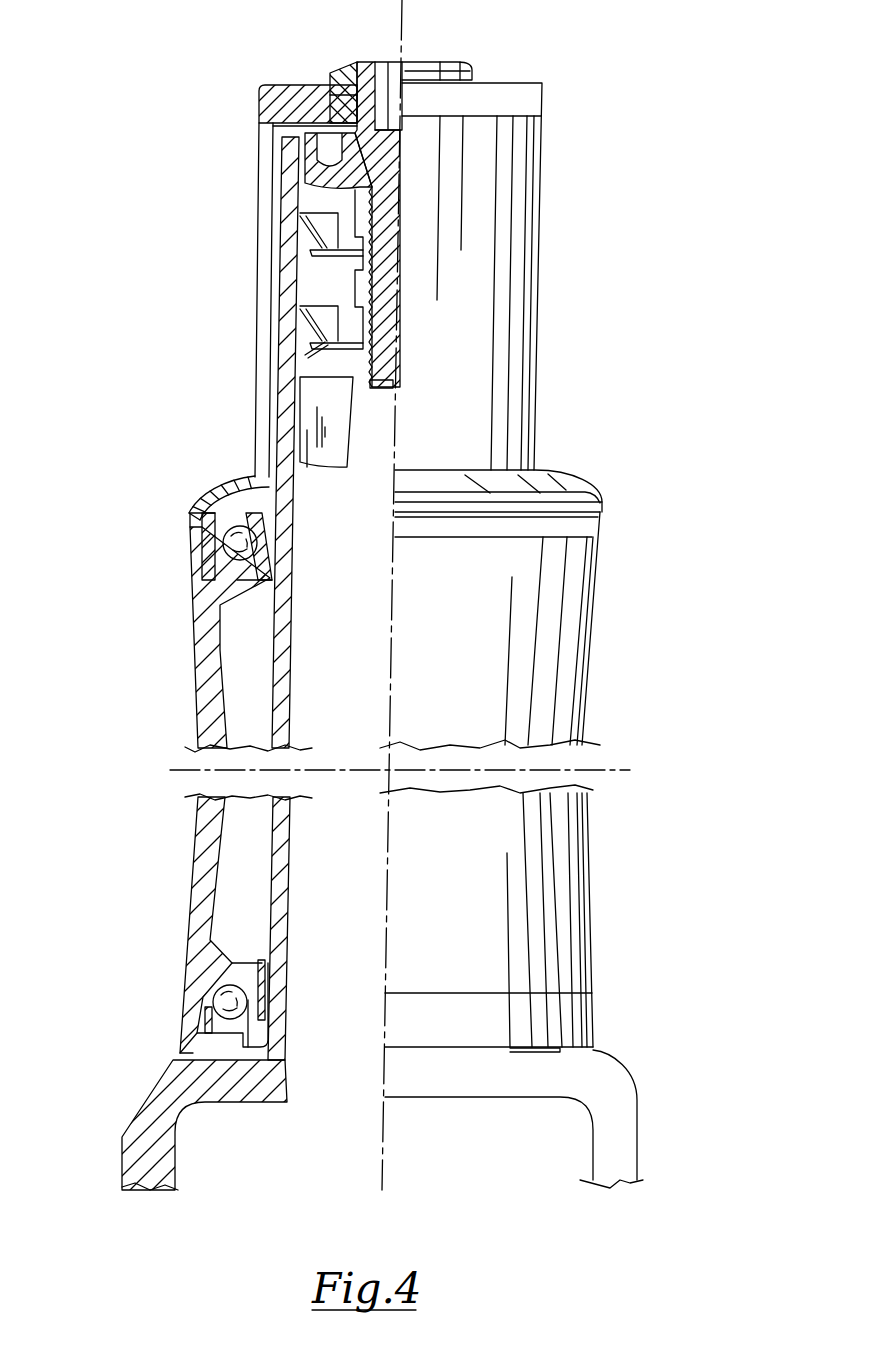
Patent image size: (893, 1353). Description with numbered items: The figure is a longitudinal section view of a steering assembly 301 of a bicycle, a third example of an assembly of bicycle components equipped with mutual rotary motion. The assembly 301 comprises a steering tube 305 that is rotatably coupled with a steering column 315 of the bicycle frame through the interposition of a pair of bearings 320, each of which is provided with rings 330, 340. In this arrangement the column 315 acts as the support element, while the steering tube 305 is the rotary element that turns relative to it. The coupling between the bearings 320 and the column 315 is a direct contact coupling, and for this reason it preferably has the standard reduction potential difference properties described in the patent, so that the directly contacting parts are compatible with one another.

The steering assembly 301 is at (192, 200).
The steering tube 305 is at (288, 630).
The steering column 315 is at (207, 638).
The bearings 320 is at (182, 528).
The ring 330 is at (192, 518).
The ring 340 is at (270, 528).